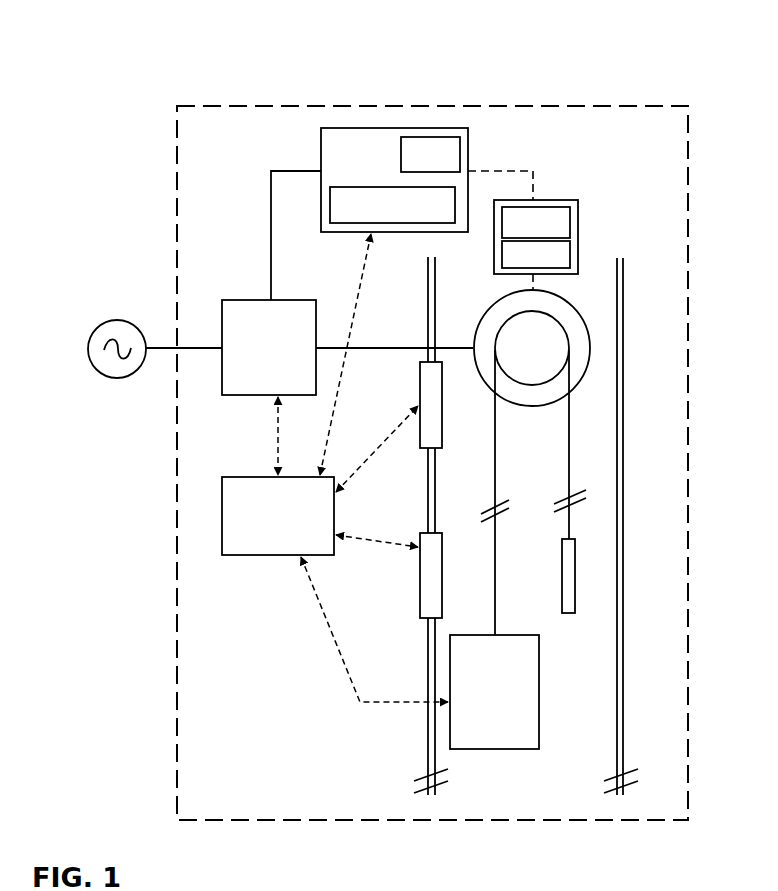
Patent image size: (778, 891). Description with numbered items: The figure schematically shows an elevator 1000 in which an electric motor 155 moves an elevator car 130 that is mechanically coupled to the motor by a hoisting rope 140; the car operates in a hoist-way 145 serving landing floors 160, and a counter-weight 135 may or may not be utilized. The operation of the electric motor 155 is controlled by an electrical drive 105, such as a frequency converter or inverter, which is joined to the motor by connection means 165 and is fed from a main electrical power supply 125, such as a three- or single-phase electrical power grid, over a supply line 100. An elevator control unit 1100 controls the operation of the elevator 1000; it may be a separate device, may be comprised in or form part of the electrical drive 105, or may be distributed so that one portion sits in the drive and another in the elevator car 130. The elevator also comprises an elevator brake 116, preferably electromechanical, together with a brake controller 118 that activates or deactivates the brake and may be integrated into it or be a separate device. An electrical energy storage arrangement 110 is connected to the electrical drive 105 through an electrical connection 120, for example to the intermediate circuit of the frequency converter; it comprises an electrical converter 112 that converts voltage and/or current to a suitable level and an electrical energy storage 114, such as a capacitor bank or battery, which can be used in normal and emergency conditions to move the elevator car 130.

The elevator 1000 is at (177, 106).
The power supply line 100 is at (190, 349).
The electrical drive 105 is at (347, 347).
The electrical energy storage arrangement 110 is at (394, 180).
The electrical converter 112 is at (430, 154).
The electrical energy storage 114 is at (392, 205).
The elevator brake 116 is at (536, 222).
The brake controller 118 is at (536, 254).
The electrical connection 120 is at (310, 168).
The main electrical power supply 125 is at (92, 368).
The elevator car 130 is at (450, 658).
The counter-weight 135 is at (577, 572).
The hoisting rope 140 is at (495, 602).
The hoist-way 145 is at (588, 264).
The electric motor 155 is at (582, 317).
The landing floors 160 is at (420, 615).
The connection means 165 is at (398, 346).
The elevator control unit 1100 is at (278, 516).